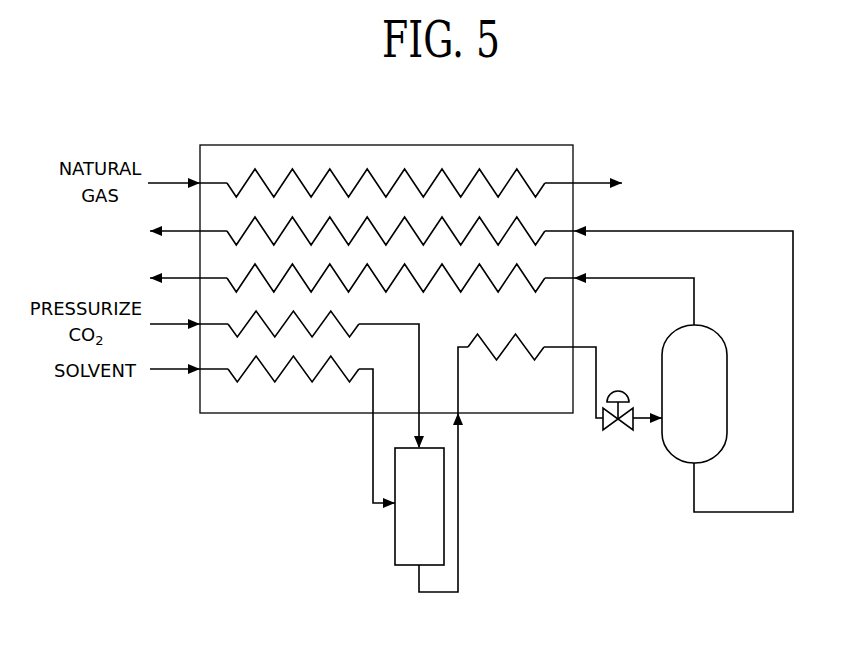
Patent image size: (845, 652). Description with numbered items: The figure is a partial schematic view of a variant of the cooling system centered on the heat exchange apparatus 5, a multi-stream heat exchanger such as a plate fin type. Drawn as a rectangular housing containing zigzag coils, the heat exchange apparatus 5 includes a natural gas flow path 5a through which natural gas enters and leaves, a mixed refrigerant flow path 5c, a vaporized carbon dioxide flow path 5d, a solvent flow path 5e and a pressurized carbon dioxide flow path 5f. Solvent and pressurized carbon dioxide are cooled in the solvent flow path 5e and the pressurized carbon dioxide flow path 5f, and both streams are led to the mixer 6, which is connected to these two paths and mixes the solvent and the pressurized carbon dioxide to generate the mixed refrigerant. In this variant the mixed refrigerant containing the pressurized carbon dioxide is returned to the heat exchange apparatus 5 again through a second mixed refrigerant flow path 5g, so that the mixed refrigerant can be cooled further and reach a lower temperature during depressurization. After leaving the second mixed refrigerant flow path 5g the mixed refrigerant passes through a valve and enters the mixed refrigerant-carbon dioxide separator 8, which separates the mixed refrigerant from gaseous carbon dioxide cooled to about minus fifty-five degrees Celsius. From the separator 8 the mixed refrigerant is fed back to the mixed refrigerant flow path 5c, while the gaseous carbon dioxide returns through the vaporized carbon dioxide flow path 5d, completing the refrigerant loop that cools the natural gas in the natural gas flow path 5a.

The heat exchange apparatus 5 is at (226, 145).
The natural gas flow path 5a is at (300, 177).
The mixed refrigerant flow path 5c is at (340, 228).
The vaporized carbon dioxide flow path 5d is at (415, 272).
The solvent flow path 5e is at (263, 372).
The pressurized carbon dioxide flow path 5f is at (303, 326).
The second mixed refrigerant flow path 5g is at (527, 352).
The mixer 6 is at (393, 535).
The mixed refrigerant-carbon dioxide separator 8 is at (728, 367).